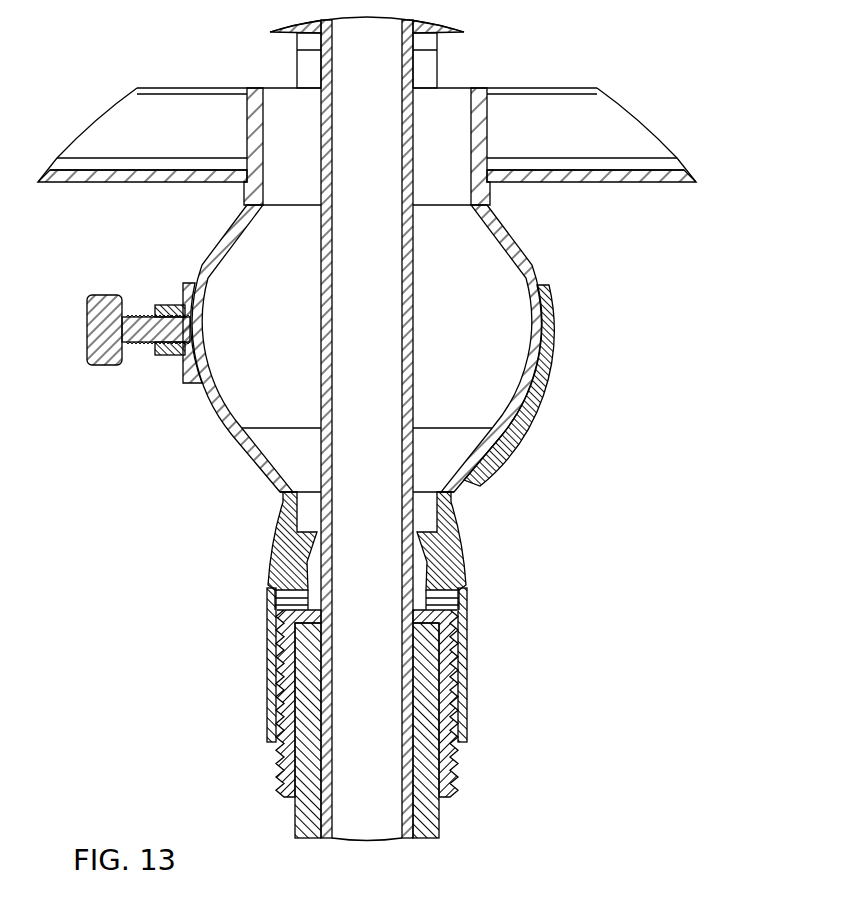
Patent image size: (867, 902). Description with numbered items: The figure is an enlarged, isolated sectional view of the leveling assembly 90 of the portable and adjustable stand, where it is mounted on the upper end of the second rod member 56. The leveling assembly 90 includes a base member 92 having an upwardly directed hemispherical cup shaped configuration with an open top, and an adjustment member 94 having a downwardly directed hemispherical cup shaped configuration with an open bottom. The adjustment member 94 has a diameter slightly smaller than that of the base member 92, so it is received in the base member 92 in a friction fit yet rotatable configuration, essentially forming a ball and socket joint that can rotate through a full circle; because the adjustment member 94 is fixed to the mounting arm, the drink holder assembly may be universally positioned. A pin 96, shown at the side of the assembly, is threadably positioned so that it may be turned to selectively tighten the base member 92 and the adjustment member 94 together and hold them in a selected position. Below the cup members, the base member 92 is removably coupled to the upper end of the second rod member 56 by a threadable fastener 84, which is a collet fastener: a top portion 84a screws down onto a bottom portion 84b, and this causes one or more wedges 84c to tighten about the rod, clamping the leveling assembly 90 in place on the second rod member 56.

The second rod member 56 is at (345, 470).
The threadable fastener 84 is at (467, 665).
The top portion 84a is at (465, 605).
The bottom portion 84b is at (457, 773).
The wedges 84c is at (420, 567).
The leveling assembly 90 is at (633, 338).
The base member 92 is at (530, 427).
The adjustment member 94 is at (518, 242).
The pin 96 is at (135, 342).